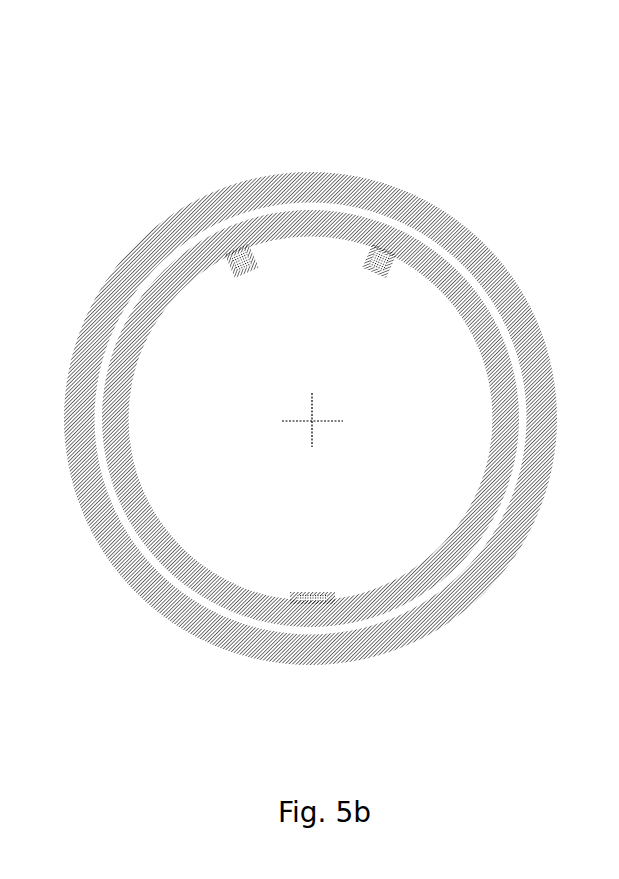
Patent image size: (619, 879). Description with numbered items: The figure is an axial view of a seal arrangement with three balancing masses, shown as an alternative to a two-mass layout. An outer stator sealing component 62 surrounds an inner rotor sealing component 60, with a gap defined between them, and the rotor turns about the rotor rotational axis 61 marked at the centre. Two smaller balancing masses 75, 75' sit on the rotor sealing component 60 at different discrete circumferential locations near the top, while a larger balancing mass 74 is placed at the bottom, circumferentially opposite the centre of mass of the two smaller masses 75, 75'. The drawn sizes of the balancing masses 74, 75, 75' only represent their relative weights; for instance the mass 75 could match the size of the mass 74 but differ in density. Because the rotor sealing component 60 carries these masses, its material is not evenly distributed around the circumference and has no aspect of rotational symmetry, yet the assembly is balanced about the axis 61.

The rotor sealing component 60 is at (310, 342).
The rotor rotational axis 61 is at (444, 281).
The stator sealing component 62 is at (310, 351).
The balancing mass 74 is at (406, 689).
The balancing mass 75 is at (183, 168).
The balancing mass 75' is at (444, 168).